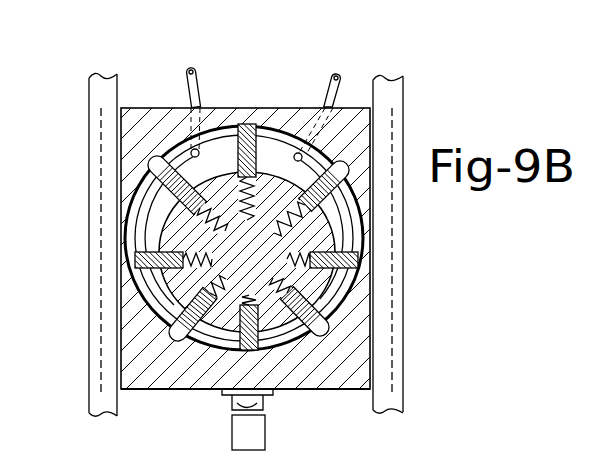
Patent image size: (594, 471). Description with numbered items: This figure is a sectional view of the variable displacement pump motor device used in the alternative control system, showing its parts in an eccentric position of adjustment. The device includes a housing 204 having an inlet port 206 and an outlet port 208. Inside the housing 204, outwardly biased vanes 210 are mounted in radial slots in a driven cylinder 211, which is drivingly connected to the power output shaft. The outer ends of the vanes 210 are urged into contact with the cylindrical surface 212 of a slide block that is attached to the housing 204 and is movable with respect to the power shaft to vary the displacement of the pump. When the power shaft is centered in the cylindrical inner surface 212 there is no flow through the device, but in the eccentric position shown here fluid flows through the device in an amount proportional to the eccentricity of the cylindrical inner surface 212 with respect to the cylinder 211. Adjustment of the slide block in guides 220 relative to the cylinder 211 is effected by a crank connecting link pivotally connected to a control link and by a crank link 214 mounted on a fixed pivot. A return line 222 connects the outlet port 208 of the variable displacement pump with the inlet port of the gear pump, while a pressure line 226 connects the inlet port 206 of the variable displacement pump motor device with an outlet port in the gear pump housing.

The housing 204 is at (152, 389).
The inlet port 206 is at (121, 155).
The outlet port 208 is at (345, 210).
The vanes 210 is at (268, 128).
The driven cylinder 211 is at (168, 237).
The cylindrical surface 212 is at (226, 128).
The crank link 214 is at (265, 437).
The guides 220 is at (88, 92).
The return line 222 is at (331, 81).
The pressure line 226 is at (187, 86).